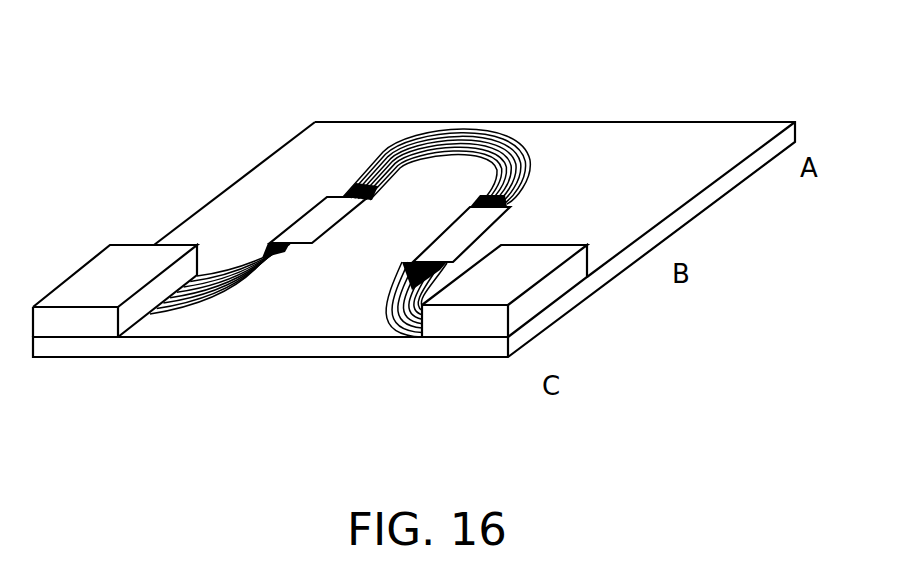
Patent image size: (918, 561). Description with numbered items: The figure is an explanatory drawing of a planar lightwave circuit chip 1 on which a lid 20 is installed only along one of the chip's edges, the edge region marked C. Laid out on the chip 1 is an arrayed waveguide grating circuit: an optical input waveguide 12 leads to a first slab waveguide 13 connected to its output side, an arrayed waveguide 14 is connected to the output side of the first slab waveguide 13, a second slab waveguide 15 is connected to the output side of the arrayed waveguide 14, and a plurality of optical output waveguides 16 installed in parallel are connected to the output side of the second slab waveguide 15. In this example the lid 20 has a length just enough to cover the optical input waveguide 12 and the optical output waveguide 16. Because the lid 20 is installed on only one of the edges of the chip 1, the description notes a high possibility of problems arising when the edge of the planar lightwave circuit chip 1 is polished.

The planar lightwave circuit chip 1 is at (315, 320).
The optical input waveguide 12 is at (177, 318).
The first slab waveguide 13 is at (310, 222).
The arrayed waveguide 14 is at (500, 125).
The second slab waveguide 15 is at (500, 217).
The optical output waveguide 16 is at (402, 330).
The lid 20 is at (108, 257).